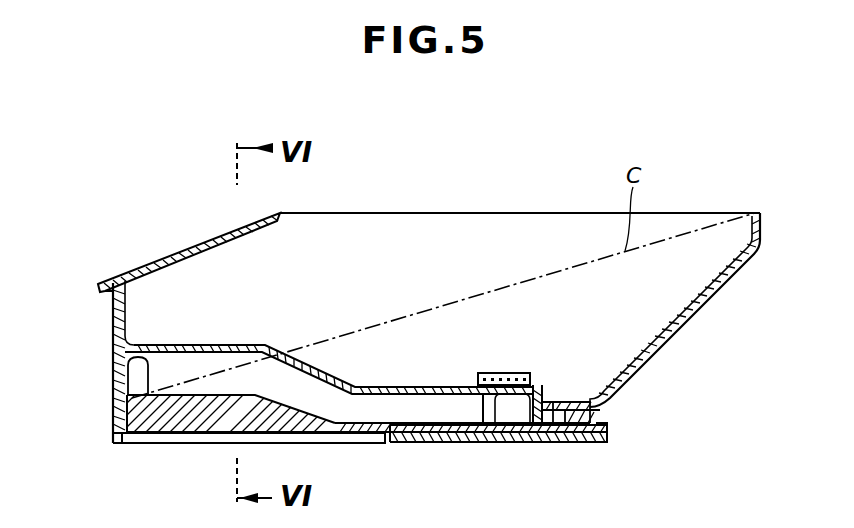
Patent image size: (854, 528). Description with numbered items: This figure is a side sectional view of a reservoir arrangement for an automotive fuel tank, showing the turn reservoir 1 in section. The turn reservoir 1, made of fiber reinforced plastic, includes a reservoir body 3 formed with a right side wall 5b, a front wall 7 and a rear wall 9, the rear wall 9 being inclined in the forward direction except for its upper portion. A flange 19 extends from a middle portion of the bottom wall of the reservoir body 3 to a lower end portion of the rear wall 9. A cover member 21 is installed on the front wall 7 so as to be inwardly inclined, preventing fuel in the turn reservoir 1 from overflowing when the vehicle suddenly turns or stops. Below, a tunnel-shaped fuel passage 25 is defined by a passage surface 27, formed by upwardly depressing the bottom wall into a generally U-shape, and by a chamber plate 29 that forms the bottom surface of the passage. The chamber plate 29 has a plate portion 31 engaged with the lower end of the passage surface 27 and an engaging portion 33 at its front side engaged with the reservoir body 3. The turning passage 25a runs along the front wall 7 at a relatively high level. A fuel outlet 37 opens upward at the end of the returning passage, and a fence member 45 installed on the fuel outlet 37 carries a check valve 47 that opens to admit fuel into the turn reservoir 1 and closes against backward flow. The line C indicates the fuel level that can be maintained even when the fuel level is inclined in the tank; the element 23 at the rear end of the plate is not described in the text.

The turn reservoir 1 is at (531, 270).
The reservoir body 3 is at (697, 208).
The right side wall 5b is at (492, 213).
The front wall 7 is at (113, 315).
The rear wall 9 is at (675, 310).
The flange 19 is at (568, 438).
The cover member 21 is at (160, 257).
The bottom plate end 23 is at (608, 436).
The fuel passage 25 is at (190, 397).
The turning passage 25a is at (132, 372).
The passage surface 27 is at (200, 345).
The chamber plate 29 is at (340, 440).
The plate portion 31 is at (420, 444).
The engaging portion 33 is at (218, 433).
The fuel outlet 37 is at (502, 393).
The fence member 45 is at (540, 413).
The check valve 47 is at (522, 372).